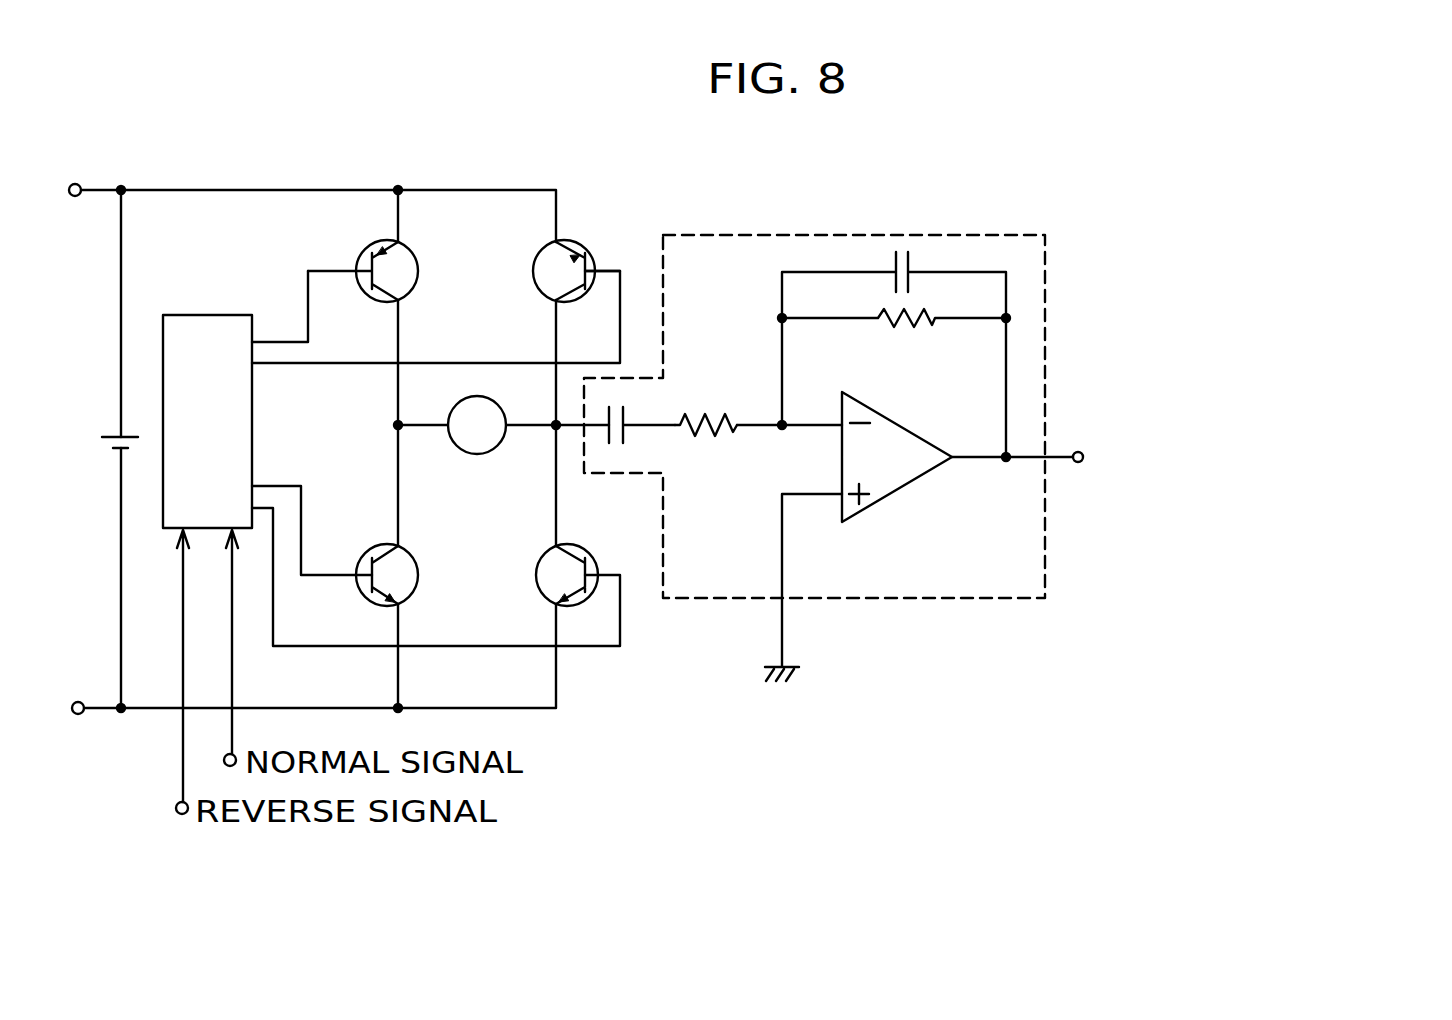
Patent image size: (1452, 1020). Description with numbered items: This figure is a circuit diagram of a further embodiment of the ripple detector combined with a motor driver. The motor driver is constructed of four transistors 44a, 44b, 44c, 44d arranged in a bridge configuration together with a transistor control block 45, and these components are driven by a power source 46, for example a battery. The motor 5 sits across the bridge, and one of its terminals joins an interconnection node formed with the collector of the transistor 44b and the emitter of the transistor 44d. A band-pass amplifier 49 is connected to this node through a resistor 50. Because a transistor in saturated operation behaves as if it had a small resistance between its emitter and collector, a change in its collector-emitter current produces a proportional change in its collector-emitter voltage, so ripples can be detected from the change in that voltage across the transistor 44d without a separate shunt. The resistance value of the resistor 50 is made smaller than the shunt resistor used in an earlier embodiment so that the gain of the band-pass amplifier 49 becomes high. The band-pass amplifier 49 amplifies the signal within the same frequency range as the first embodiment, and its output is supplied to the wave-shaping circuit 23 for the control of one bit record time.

The motor 5 is at (477, 455).
The wave-shaping circuit 23 is at (1254, 474).
The transistor 44a is at (415, 262).
The transistor 44b is at (577, 246).
The transistor 44c is at (365, 597).
The transistor 44d is at (540, 595).
The transistor control block 45 is at (213, 314).
The power source 46 is at (115, 444).
The band-pass amplifier 49 is at (838, 234).
The resistor 50 is at (710, 414).